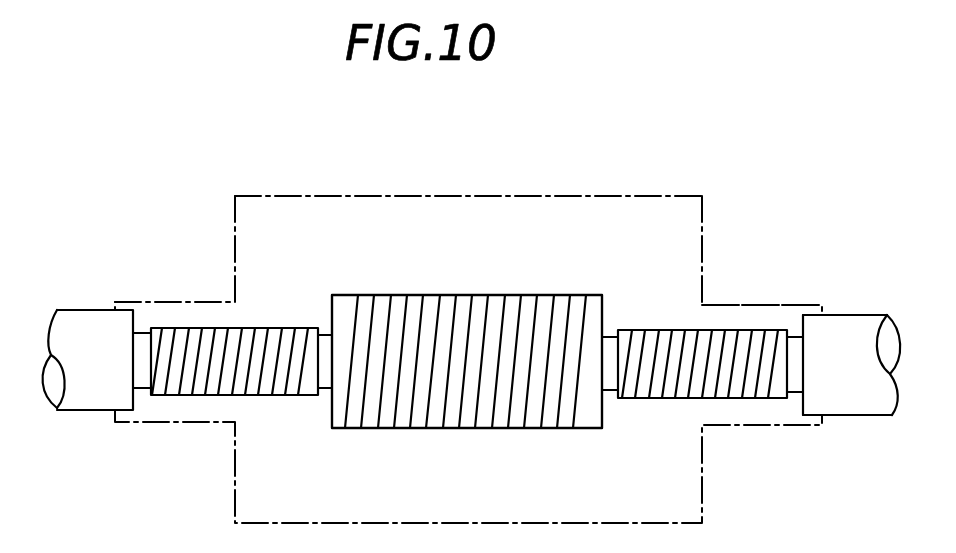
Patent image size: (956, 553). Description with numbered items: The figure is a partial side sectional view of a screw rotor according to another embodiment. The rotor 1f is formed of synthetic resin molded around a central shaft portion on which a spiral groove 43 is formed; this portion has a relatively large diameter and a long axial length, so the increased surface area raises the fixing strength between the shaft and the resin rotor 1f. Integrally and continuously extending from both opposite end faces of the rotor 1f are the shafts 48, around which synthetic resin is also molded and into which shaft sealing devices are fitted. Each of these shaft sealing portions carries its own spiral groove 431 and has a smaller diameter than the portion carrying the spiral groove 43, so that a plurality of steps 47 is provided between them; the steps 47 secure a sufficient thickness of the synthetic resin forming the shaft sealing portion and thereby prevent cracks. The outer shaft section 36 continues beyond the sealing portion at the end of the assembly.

The rotor 1f is at (427, 193).
The shaft 36 is at (853, 317).
The spiral groove 43 is at (533, 318).
The spiral groove 431 is at (208, 343).
The steps 47 is at (140, 318).
The shafts 48 is at (174, 302).